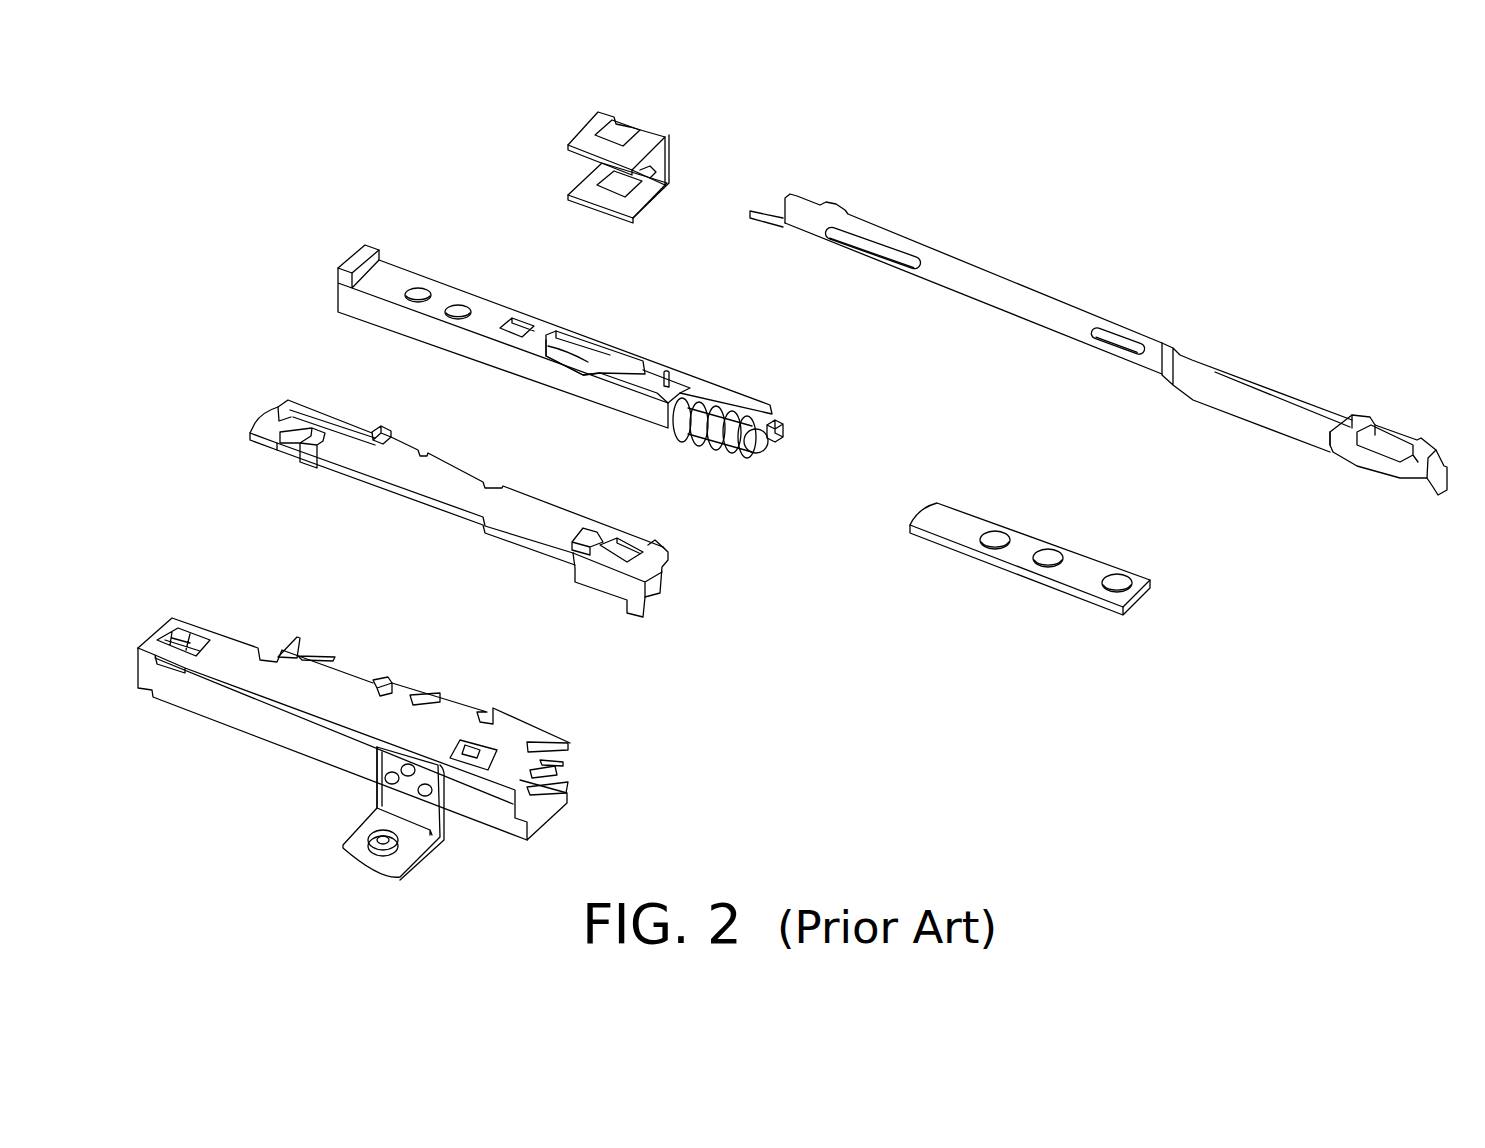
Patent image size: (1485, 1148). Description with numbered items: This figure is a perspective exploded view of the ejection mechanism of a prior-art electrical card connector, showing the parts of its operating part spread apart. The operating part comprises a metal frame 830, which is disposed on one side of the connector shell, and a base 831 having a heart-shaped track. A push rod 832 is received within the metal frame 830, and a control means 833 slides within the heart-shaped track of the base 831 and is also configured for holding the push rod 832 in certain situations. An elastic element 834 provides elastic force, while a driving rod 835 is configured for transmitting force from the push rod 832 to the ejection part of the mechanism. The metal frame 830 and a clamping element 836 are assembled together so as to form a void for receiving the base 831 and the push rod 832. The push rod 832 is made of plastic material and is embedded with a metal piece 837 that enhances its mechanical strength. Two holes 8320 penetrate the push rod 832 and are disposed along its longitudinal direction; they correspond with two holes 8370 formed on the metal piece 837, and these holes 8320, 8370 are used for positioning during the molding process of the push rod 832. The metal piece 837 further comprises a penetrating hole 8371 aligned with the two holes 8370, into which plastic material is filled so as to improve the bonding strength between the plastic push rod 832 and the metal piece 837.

The metal frame 830 is at (228, 650).
The base 831 is at (537, 525).
The push rod 832 is at (367, 242).
The holes 8320 is at (462, 303).
The control means 833 is at (618, 368).
The elastic element 834 is at (702, 450).
The driving rod 835 is at (1002, 295).
The clamping element 836 is at (593, 127).
The metal piece 837 is at (928, 525).
The holes 8370 is at (1048, 562).
The penetrating hole 8371 is at (1117, 590).